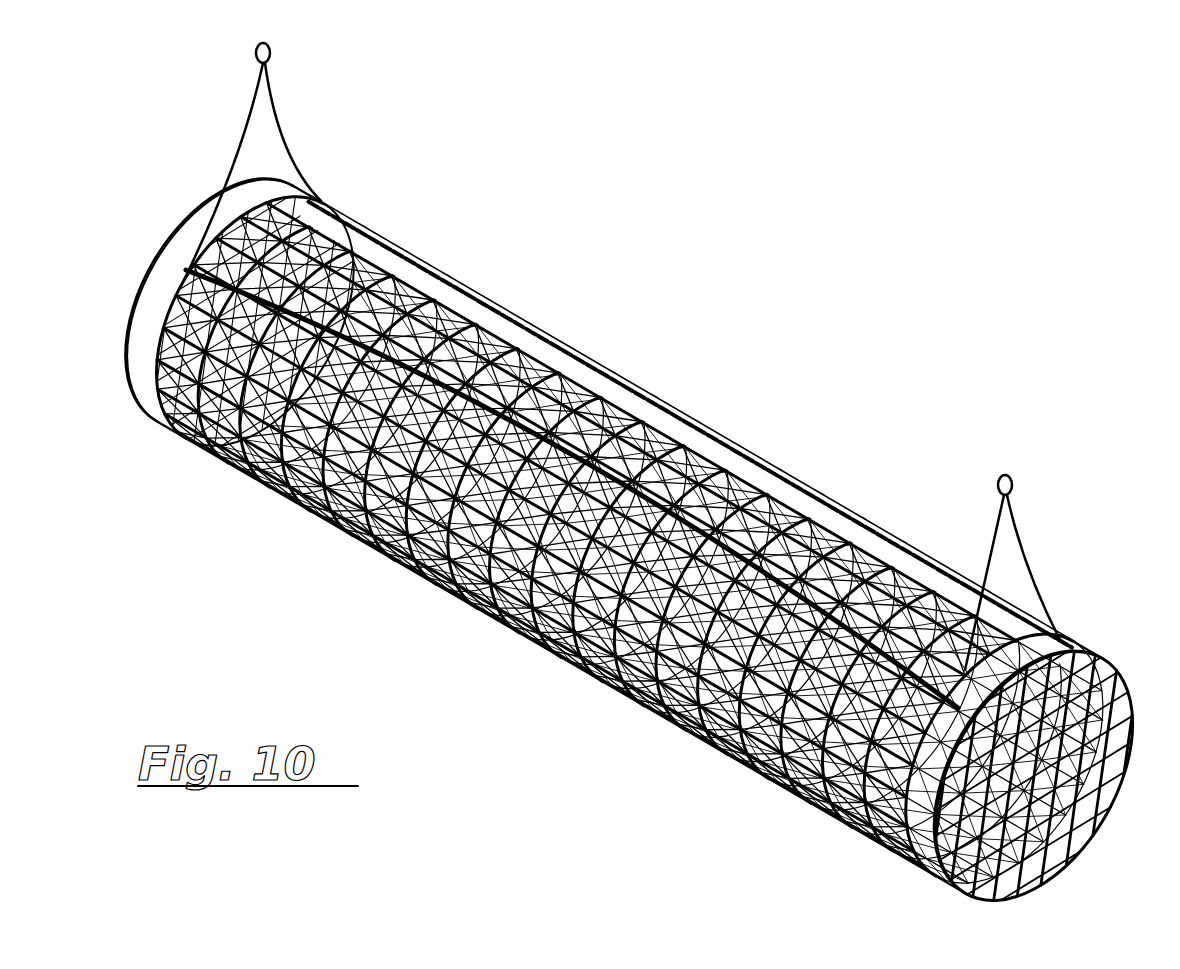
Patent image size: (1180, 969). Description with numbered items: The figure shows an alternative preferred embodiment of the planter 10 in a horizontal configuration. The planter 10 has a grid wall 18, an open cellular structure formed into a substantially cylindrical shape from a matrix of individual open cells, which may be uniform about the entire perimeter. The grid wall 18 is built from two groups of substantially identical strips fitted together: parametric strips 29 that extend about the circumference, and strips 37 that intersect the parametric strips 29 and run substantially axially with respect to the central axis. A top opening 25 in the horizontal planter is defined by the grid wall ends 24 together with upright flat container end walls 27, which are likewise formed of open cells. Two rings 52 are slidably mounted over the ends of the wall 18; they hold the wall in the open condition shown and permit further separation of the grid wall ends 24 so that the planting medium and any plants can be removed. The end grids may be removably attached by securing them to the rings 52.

The planter 10 is at (708, 362).
The grid wall 18 is at (692, 421).
The grid wall ends 24 is at (641, 422).
The top opening 25 is at (686, 430).
The container end walls 27 is at (232, 176).
The parametric strips 29 is at (1118, 677).
The axial strips 37 is at (1120, 722).
The rings 52 is at (148, 293).